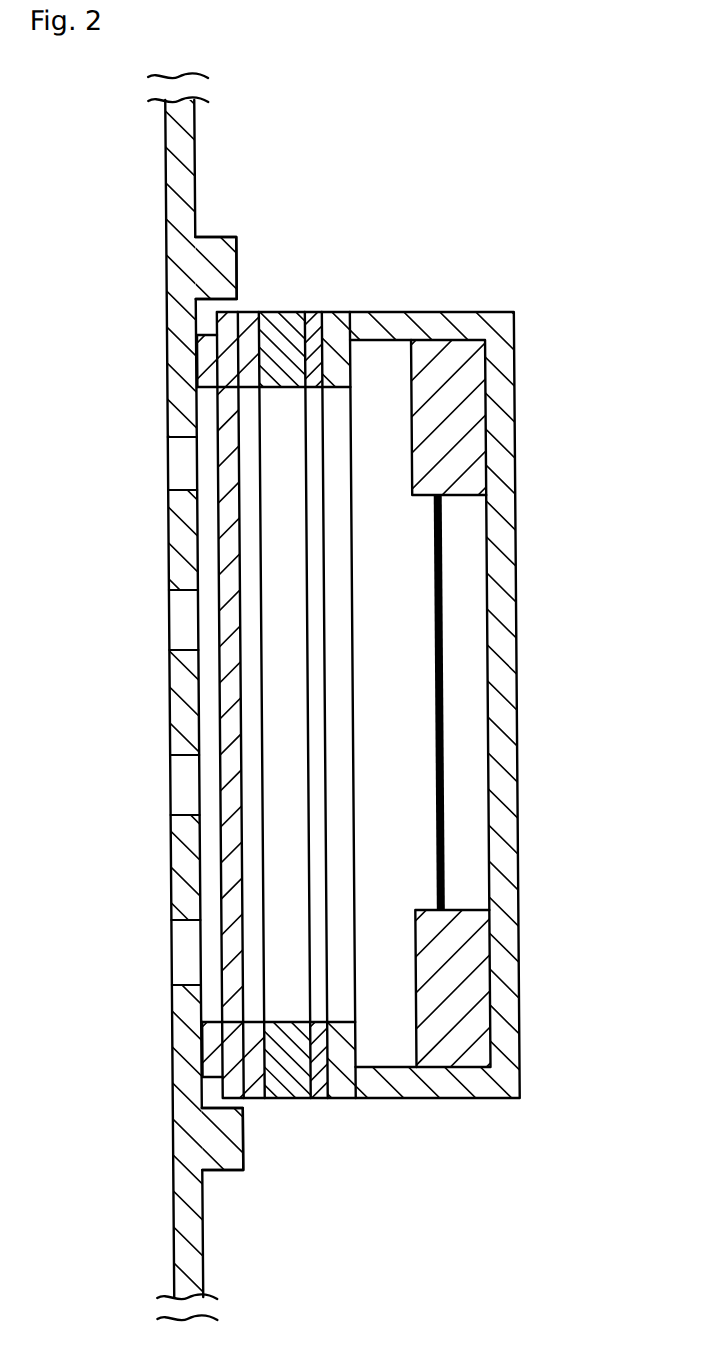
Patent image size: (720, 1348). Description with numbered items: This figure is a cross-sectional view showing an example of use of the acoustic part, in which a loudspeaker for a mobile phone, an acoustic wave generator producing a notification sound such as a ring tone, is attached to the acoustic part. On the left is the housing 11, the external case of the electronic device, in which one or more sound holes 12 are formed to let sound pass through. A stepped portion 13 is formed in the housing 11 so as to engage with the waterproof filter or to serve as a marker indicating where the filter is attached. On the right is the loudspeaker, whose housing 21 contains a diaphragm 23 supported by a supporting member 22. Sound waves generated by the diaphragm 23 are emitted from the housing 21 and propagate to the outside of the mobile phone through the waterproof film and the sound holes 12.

The housing 11 is at (181, 205).
The sound holes 12 is at (179, 452).
The stepped portion 13 is at (237, 262).
The housing of the loudspeaker 21 is at (383, 322).
The supporting member 22 is at (455, 360).
The diaphragm 23 is at (441, 610).